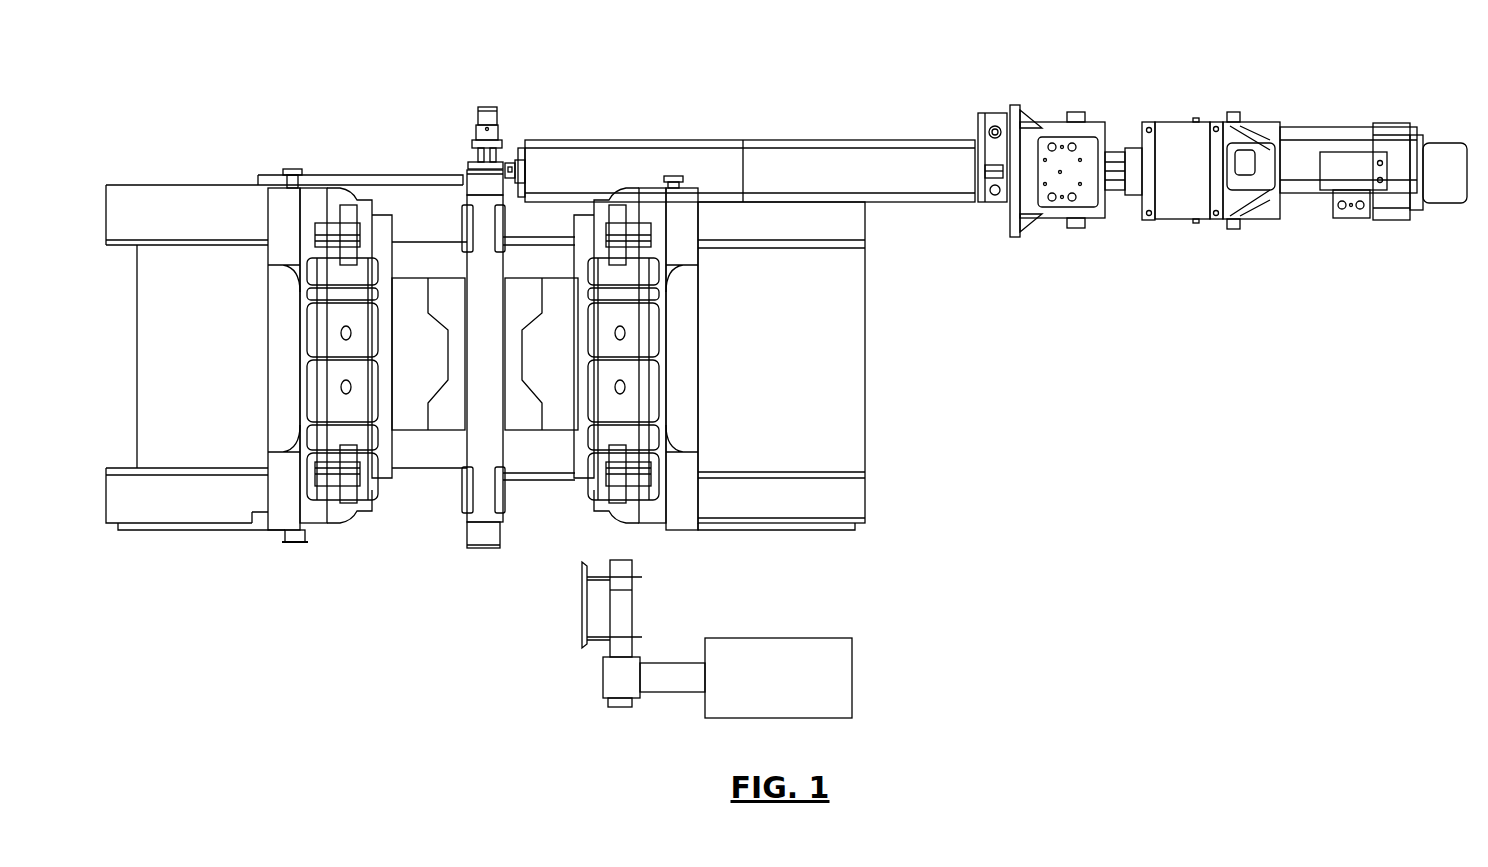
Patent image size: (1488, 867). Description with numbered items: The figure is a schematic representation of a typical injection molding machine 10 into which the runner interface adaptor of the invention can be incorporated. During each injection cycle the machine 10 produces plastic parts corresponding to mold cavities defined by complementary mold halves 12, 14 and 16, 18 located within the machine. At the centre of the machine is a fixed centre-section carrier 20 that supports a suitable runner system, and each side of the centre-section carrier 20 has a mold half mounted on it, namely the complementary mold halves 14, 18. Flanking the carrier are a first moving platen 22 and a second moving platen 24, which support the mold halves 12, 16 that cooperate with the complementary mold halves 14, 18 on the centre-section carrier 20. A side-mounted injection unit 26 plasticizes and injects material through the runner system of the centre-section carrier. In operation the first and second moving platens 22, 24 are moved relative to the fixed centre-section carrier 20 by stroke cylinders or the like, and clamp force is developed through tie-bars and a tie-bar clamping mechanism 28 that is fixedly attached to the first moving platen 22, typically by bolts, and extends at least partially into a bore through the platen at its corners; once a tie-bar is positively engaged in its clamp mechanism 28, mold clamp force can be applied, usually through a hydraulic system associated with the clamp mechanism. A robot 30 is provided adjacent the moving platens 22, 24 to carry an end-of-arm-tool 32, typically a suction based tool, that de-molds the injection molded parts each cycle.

The injection molding machine 10 is at (311, 71).
The mold half 12 is at (402, 361).
The mold half 14 is at (435, 423).
The mold half 16 is at (535, 361).
The mold half 18 is at (503, 418).
The fixed centre-section carrier 20 is at (478, 535).
The first moving platen 22 is at (691, 200).
The second moving platen 24 is at (277, 520).
The side-mounted injection unit 26 is at (1177, 137).
The tie-bar clamping mechanism 28 is at (313, 505).
The robot 30 is at (739, 687).
The end-of-arm-tool 32 is at (578, 630).